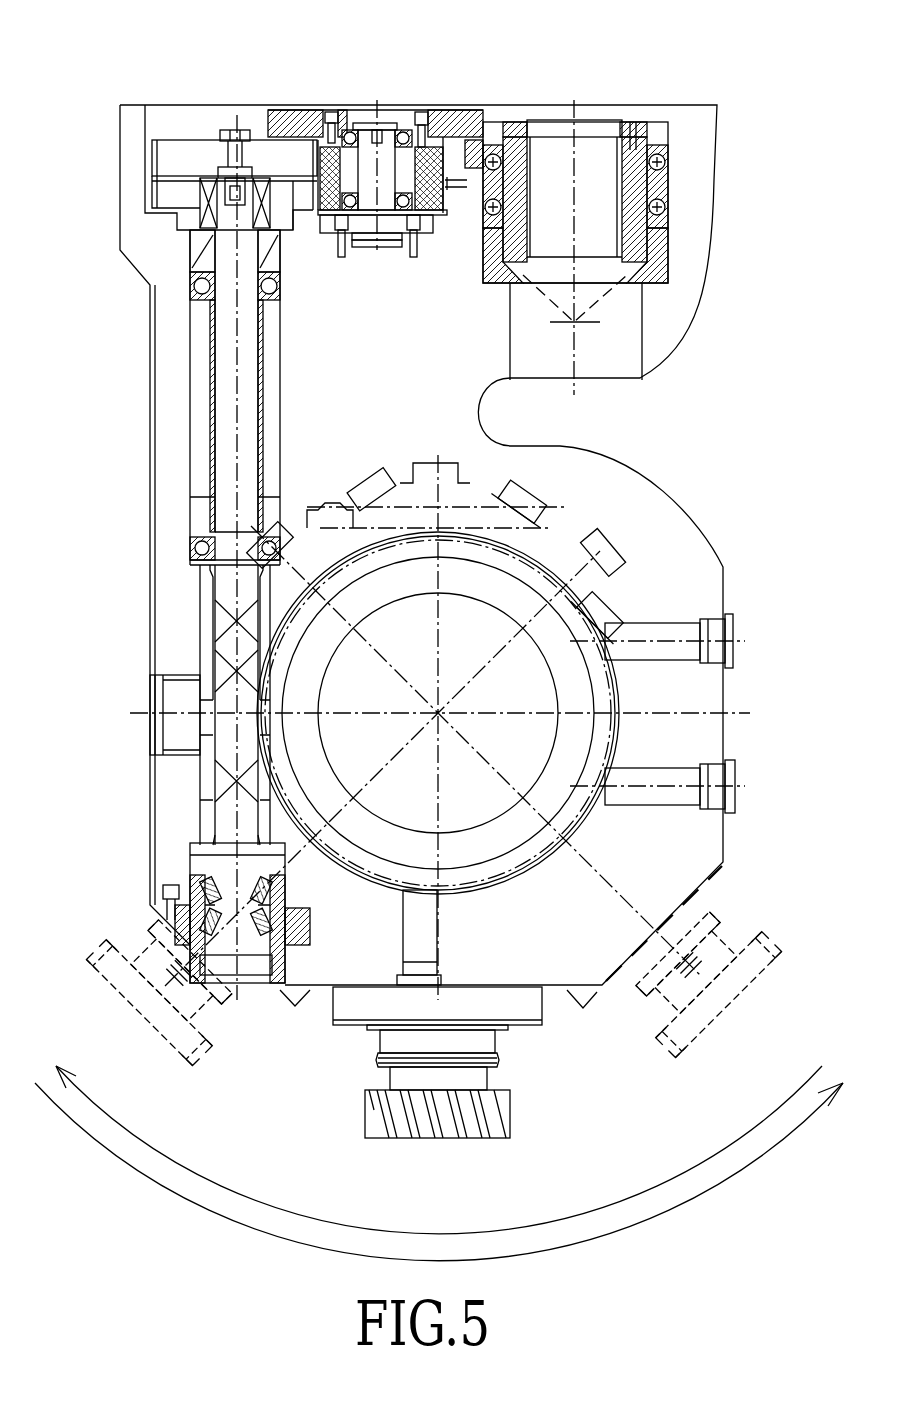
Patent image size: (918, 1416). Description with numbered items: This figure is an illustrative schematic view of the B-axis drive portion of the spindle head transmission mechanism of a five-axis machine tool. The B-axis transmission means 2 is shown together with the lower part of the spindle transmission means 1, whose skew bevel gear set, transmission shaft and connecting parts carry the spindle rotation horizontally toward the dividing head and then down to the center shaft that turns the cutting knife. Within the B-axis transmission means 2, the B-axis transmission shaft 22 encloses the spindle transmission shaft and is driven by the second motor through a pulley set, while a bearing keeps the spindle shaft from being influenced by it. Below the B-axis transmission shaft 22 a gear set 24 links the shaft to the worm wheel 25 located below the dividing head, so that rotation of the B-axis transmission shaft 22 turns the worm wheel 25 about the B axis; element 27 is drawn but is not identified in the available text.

The spindle transmission means 1 is at (530, 1102).
The B-axis transmission means 2 is at (528, 1007).
The B-axis transmission shaft 22 is at (668, 213).
The gear set 24 is at (310, 84).
The worm wheel 25 is at (638, 738).
The ring gear 27 is at (560, 628).